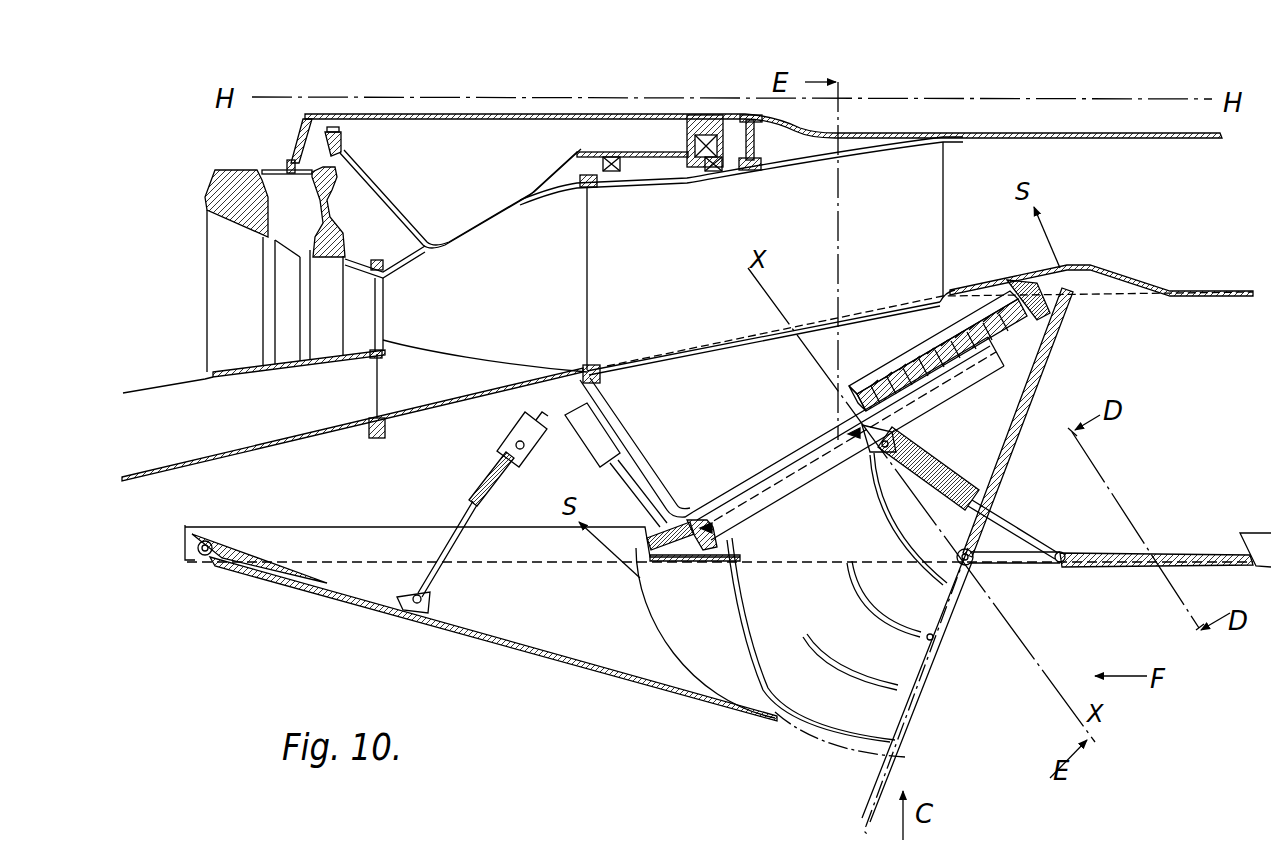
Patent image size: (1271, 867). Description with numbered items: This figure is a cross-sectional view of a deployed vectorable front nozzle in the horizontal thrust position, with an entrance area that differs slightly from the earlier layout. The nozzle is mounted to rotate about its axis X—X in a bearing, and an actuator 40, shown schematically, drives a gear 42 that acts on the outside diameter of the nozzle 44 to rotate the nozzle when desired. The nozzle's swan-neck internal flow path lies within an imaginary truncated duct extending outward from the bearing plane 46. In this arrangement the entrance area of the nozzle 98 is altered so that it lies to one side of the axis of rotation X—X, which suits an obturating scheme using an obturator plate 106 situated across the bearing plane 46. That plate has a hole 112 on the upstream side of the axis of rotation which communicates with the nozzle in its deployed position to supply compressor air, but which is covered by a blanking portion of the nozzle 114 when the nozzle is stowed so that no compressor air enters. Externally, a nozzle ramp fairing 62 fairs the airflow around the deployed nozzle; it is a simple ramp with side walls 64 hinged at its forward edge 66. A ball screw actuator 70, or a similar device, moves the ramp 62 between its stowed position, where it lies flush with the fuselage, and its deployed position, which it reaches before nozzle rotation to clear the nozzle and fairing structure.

The actuator 40 is at (590, 437).
The gear 42 is at (648, 555).
The outside diameter of the nozzle 44 is at (697, 540).
The bearing plane 46 is at (993, 333).
The nozzle ramp fairing 62 is at (590, 673).
The side walls 64 is at (490, 610).
The forward edge 66 is at (212, 560).
The ball screw actuator 70 is at (504, 437).
The entrance area of the nozzle 98 is at (783, 487).
The obturator plate 106 is at (862, 390).
The hole 112 is at (797, 447).
The blanking portion of the nozzle 114 is at (957, 358).